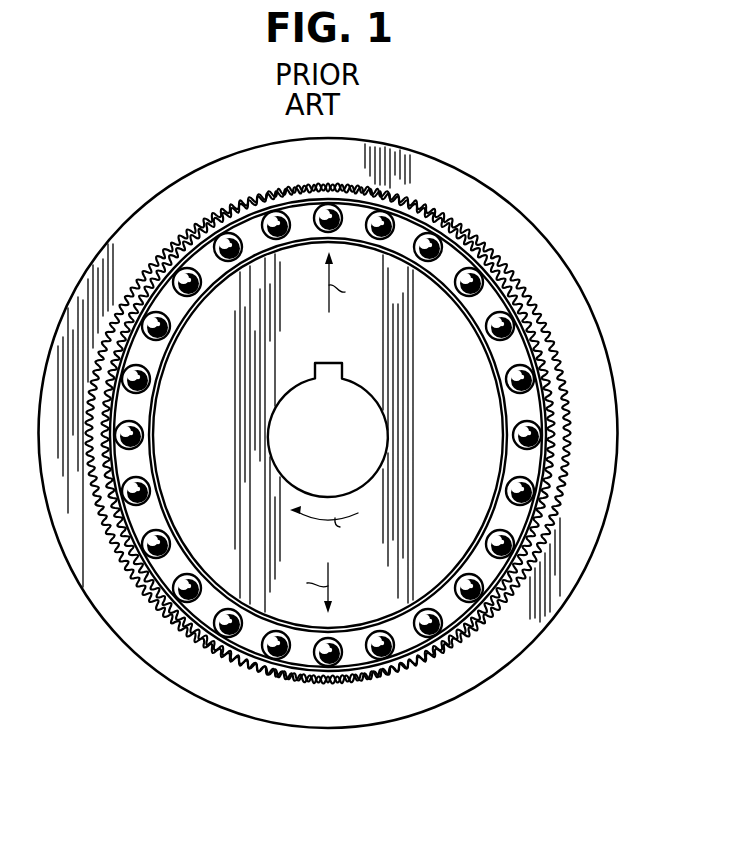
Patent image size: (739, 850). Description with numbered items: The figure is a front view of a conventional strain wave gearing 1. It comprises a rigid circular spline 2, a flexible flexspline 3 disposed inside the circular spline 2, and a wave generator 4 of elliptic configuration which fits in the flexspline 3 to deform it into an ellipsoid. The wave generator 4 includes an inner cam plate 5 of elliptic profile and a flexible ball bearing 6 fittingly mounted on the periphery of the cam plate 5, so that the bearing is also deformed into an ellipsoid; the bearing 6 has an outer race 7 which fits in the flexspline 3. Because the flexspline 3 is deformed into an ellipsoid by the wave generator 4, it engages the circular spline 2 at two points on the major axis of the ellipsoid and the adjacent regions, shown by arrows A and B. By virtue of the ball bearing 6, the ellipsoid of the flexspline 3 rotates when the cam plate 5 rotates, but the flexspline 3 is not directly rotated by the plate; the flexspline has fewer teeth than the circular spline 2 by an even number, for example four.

The strain wave gearing 1 is at (580, 251).
The rigid circular spline 2 is at (465, 190).
The flexible flexspline 3 is at (552, 340).
The wave generator 4 is at (430, 393).
The inner cam plate 5 is at (173, 503).
The flexible ball bearing 6 is at (165, 578).
The outer race 7 is at (192, 622).